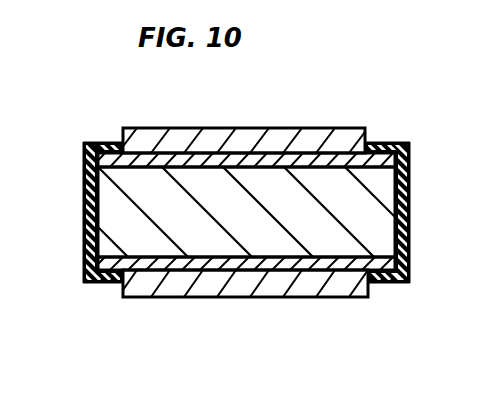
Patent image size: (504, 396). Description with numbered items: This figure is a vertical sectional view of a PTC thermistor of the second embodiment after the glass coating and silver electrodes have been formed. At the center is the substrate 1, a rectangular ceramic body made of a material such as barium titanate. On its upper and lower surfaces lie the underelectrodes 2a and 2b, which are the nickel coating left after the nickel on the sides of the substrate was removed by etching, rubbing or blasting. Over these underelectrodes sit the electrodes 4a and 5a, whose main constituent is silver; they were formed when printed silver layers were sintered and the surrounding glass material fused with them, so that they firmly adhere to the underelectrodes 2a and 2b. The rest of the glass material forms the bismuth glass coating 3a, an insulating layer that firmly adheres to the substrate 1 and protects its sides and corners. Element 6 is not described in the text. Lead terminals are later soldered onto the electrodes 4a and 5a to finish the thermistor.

The substrate 1 is at (390, 191).
The underelectrode 2a is at (287, 160).
The underelectrode 2b is at (318, 268).
The bismuth glass coating 3a is at (378, 142).
The electrode 4a is at (217, 128).
The electrode 5a is at (226, 297).
The casing 6 is at (84, 184).